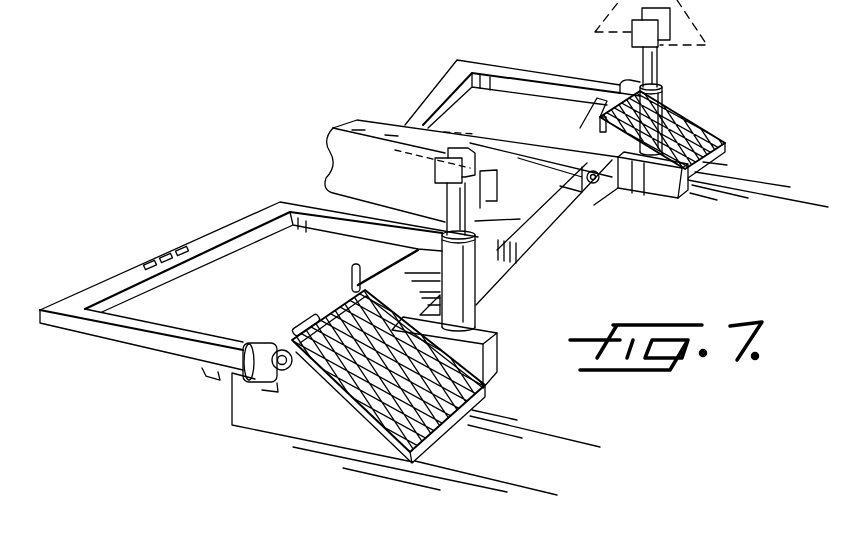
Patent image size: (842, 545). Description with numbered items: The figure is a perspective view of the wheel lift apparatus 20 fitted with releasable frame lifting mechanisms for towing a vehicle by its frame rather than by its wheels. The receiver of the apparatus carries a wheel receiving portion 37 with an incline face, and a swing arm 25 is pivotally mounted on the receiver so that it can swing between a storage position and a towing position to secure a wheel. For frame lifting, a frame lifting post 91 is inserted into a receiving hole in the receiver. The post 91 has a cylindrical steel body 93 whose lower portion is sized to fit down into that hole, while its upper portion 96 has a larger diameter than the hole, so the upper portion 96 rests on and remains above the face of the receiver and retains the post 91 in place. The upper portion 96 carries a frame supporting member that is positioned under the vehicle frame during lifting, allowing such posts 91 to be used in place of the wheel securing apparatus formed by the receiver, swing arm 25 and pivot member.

The wheel lift apparatus 20 is at (256, 464).
The swing arm 25 is at (110, 360).
The wheel receiving portion 37 is at (510, 381).
The frame lifting post 91 is at (486, 293).
The cylindrical steel body 93 is at (465, 318).
The upper portion 96 is at (488, 148).